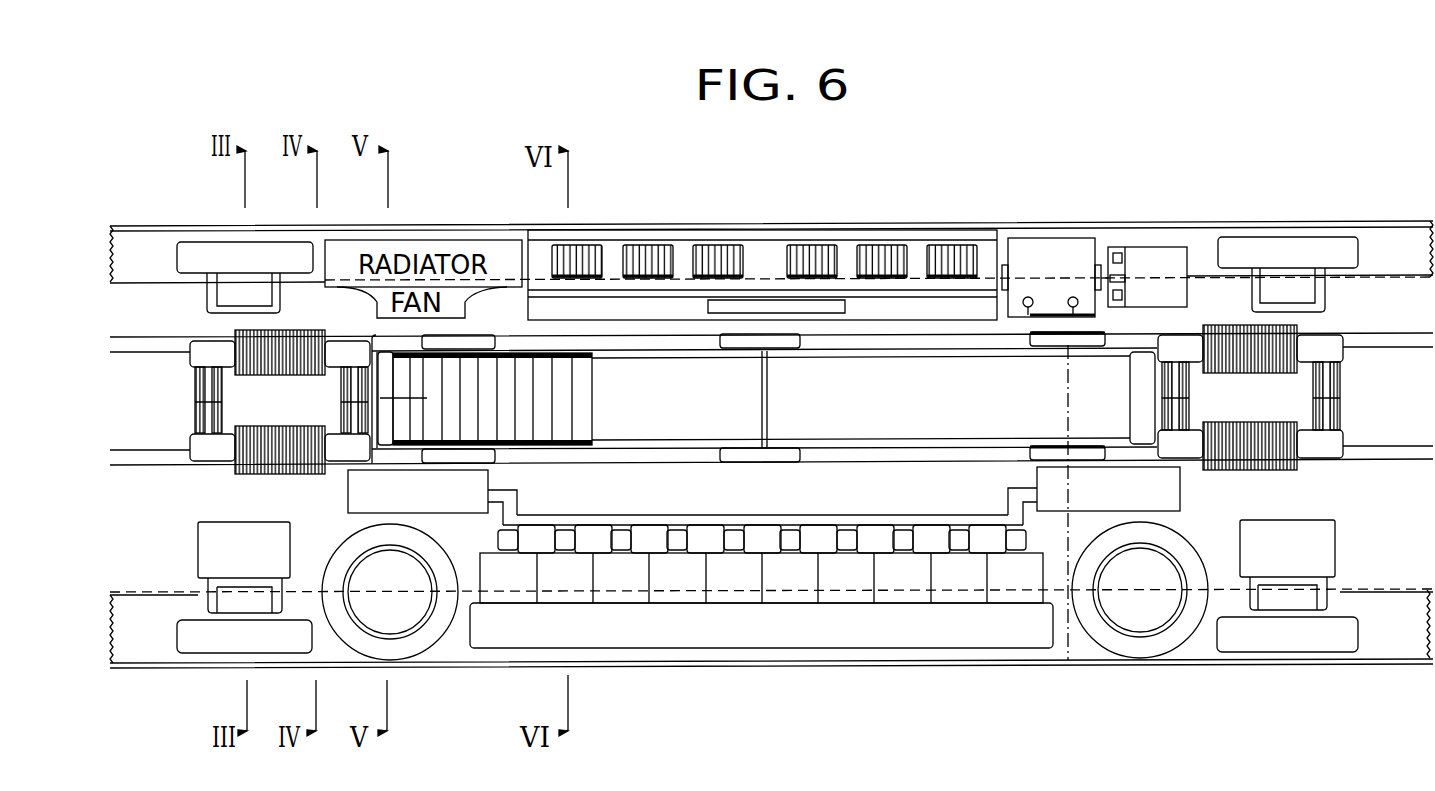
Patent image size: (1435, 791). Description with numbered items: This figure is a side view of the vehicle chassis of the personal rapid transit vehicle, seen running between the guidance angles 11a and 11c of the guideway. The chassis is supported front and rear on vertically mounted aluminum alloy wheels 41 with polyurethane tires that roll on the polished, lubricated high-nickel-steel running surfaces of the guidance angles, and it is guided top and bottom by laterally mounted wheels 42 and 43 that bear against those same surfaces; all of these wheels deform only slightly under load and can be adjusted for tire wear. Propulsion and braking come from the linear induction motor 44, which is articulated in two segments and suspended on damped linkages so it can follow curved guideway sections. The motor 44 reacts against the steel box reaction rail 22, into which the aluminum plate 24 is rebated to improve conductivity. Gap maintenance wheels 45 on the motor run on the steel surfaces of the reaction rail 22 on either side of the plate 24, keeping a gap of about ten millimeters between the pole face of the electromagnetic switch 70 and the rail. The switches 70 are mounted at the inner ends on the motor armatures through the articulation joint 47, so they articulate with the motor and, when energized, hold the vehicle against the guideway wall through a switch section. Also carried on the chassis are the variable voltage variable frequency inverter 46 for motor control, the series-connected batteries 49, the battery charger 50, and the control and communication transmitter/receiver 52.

The guidance angle 11a is at (143, 250).
The guidance angle 11c is at (157, 655).
The reaction rail 22 is at (170, 333).
The aluminum plate 24 is at (137, 367).
The wheel 41 is at (348, 548).
The wheel 42 is at (223, 255).
The wheel 43 is at (215, 653).
The linear induction motor 44 is at (875, 417).
The gap maintenance wheel 45 is at (1020, 350).
The variable voltage variable frequency inverter 46 is at (868, 307).
The articulation joint 47 is at (372, 335).
The batteries 49 is at (797, 582).
The battery charger 50 is at (477, 483).
The control and communication transmitter/receiver 52 is at (223, 520).
The electromagnetic switch 70 is at (193, 421).